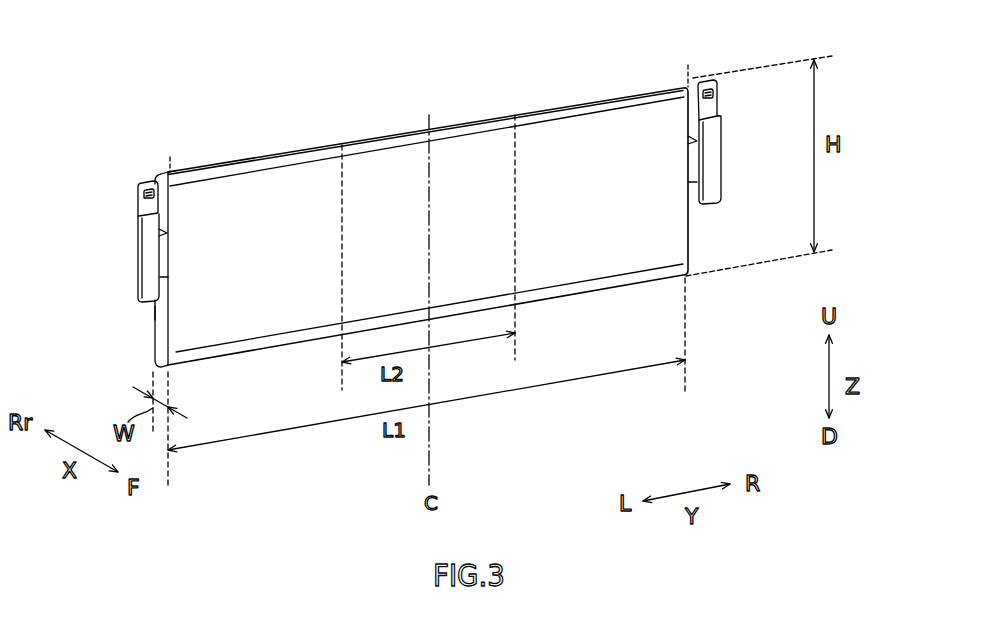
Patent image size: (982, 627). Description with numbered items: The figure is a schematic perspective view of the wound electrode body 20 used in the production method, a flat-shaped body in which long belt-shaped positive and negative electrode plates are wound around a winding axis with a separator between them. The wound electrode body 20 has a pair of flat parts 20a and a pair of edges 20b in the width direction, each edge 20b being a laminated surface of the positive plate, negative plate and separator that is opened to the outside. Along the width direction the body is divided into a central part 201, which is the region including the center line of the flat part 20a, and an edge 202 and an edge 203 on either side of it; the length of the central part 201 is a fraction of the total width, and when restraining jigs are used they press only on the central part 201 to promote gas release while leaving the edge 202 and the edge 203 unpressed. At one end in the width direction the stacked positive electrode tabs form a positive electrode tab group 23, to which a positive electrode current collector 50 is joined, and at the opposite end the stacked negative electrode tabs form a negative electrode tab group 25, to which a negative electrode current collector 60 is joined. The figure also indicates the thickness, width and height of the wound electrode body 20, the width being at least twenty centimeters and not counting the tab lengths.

The wound electrode body 20 is at (658, 82).
The flat part 20a is at (193, 196).
The edge 20b is at (155, 306).
The central part 201 is at (515, 90).
The edge 202 is at (339, 122).
The edge 203 is at (687, 62).
The positive electrode tab group 23 is at (168, 267).
The negative electrode tab group 25 is at (693, 182).
The positive electrode current collector 50 is at (138, 265).
The negative electrode current collector 60 is at (720, 153).